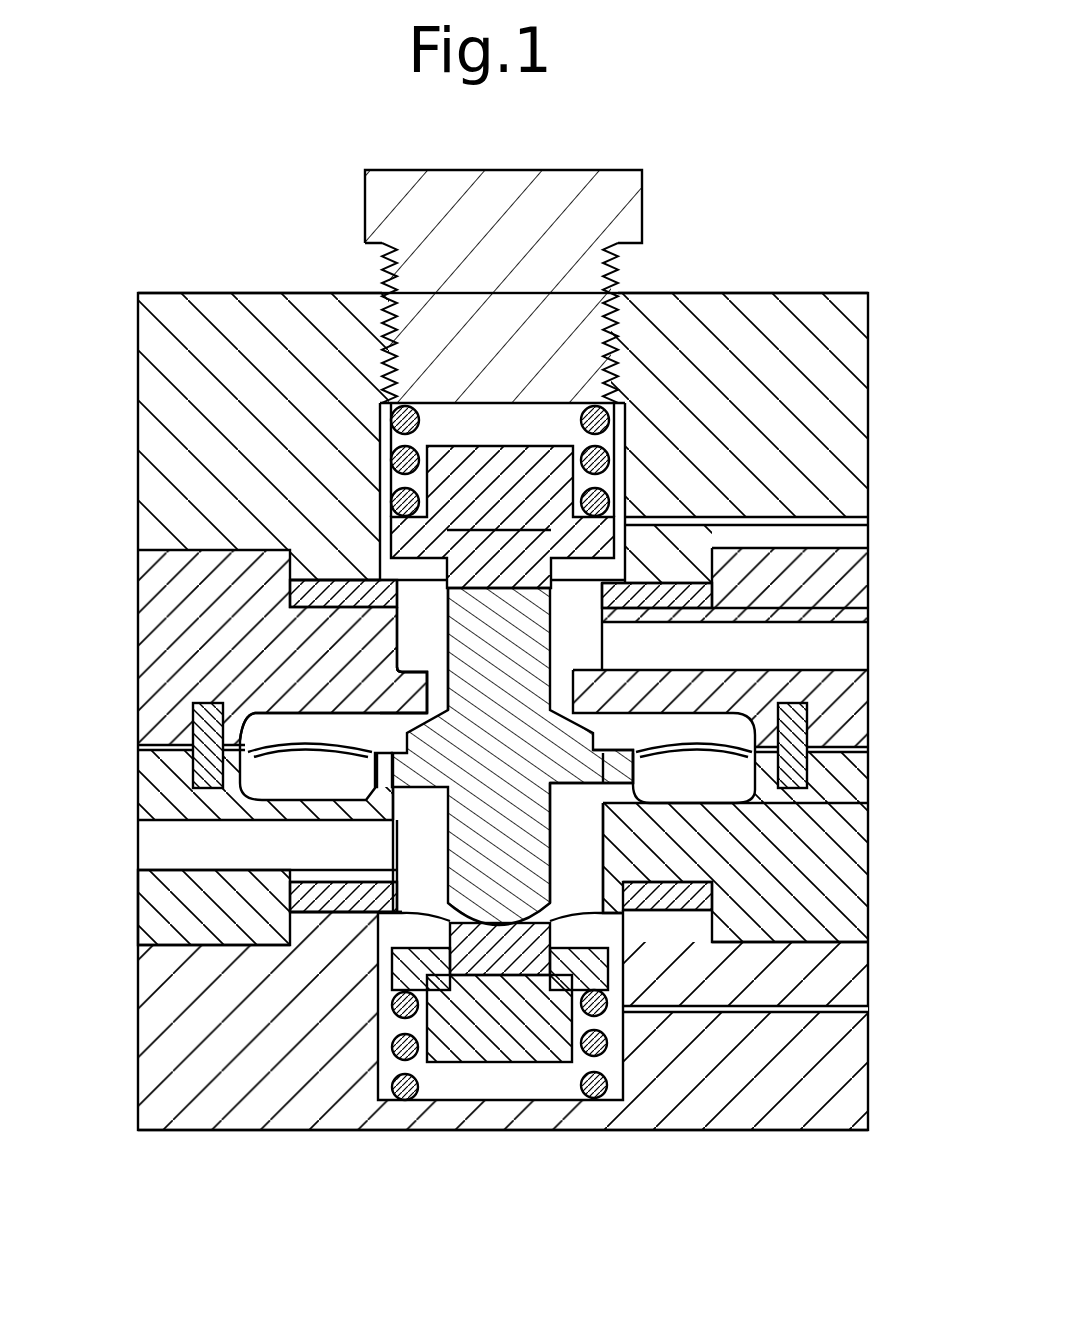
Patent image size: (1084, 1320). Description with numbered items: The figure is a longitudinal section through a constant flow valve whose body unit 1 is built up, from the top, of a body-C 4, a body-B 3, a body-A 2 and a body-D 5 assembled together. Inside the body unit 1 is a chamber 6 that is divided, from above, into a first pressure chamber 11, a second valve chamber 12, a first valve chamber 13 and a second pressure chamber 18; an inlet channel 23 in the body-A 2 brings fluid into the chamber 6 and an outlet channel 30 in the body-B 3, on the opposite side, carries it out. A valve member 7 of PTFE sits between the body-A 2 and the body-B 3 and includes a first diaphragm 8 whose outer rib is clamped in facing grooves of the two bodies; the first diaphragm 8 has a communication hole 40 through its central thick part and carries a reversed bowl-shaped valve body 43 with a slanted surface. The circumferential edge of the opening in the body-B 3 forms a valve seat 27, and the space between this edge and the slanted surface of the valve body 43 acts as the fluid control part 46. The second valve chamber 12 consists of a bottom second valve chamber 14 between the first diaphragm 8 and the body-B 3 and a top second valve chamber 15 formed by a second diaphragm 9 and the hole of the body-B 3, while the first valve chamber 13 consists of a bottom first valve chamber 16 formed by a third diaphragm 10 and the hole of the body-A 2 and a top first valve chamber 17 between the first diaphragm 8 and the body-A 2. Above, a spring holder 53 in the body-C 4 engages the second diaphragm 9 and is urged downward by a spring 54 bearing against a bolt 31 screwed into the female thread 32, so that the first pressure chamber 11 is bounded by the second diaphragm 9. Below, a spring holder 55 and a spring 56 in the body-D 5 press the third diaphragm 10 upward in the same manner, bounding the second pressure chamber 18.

The body unit 1 is at (905, 446).
The body-A 2 is at (830, 910).
The body-B 3 is at (175, 597).
The body-C 4 is at (185, 420).
The body-D 5 is at (190, 1070).
The chamber 6 is at (400, 583).
The valve member 7 is at (518, 818).
The first diaphragm 8 is at (640, 798).
The second diaphragm 9 is at (527, 563).
The third diaphragm 10 is at (380, 1013).
The first pressure chamber 11 is at (605, 415).
The second valve chamber 12 is at (420, 648).
The first valve chamber 13 is at (585, 890).
The bottom second valve chamber 14 is at (277, 728).
The top second valve chamber 15 is at (575, 627).
The bottom first valve chamber 16 is at (377, 920).
The top first valve chamber 17 is at (293, 772).
The second pressure chamber 18 is at (516, 1082).
The inlet channel 23 is at (190, 853).
The valve seat 27 is at (752, 728).
The outlet channel 30 is at (810, 645).
The bolt 31 is at (563, 197).
The female thread 32 is at (387, 345).
The communication hole 40 is at (323, 830).
The valve body 43 is at (408, 700).
The fluid control part 46 is at (675, 768).
The spring holder 53 is at (603, 478).
The spring 54 is at (390, 498).
The spring holder 55 is at (470, 1040).
The spring 56 is at (603, 1090).